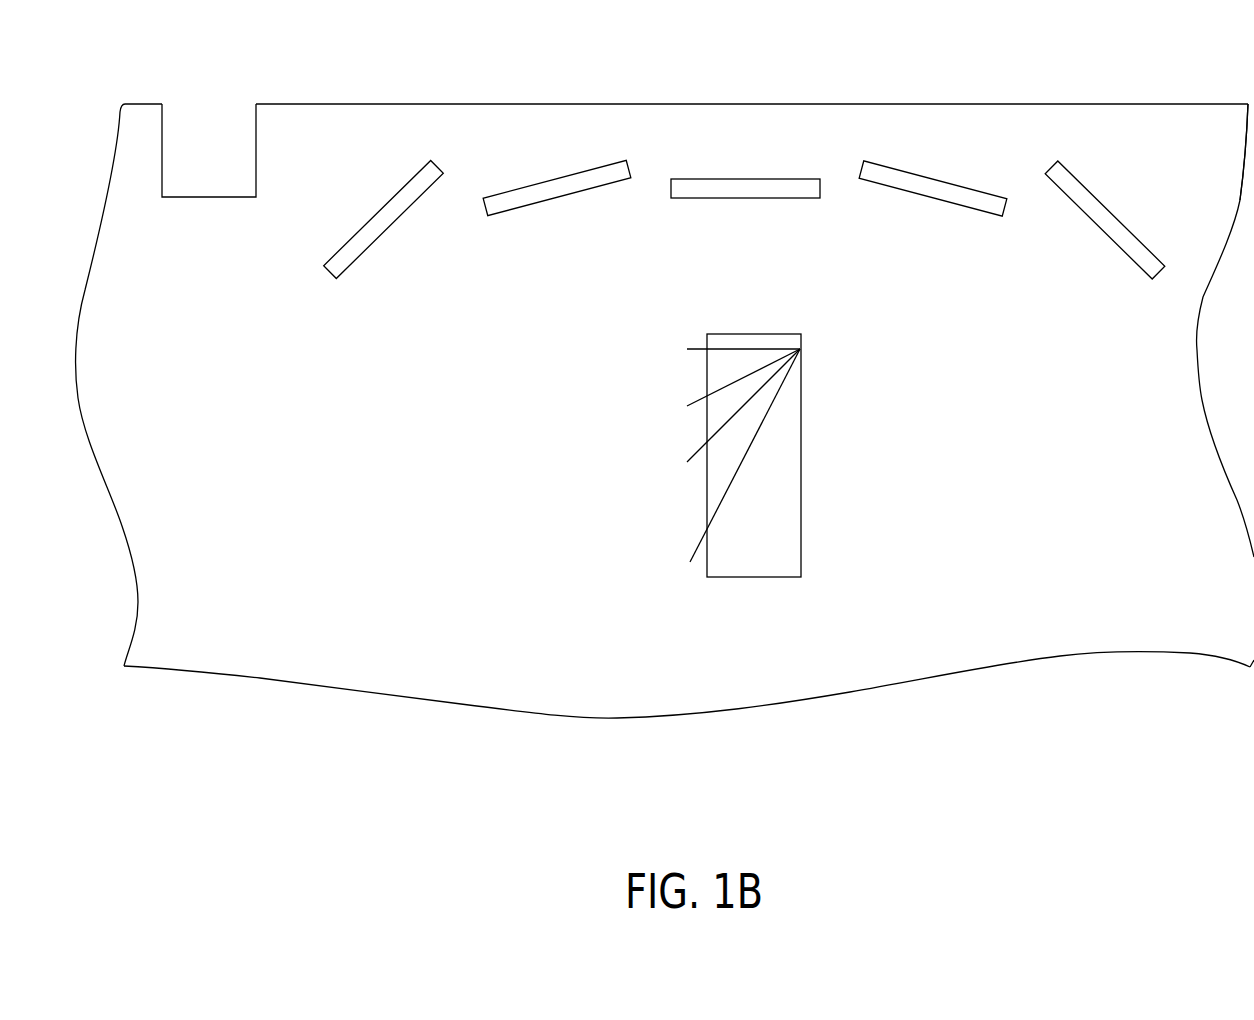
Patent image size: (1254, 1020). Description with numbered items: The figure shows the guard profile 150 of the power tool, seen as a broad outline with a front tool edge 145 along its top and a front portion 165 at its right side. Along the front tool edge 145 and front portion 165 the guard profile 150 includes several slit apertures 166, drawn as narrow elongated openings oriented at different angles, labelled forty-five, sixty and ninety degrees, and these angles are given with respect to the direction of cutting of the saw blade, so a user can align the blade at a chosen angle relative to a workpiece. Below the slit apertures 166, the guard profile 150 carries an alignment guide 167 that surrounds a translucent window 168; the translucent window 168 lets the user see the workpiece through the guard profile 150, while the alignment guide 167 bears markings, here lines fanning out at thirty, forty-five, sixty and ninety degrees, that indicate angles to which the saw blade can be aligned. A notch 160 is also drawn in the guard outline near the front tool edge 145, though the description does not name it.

The front tool edge 145 is at (340, 102).
The guard profile 150 is at (224, 637).
The notch 160 is at (184, 130).
The front portion 165 is at (1218, 138).
The slit apertures 166 is at (378, 237).
The alignment guide 167 is at (817, 588).
The translucent window 168 is at (801, 455).